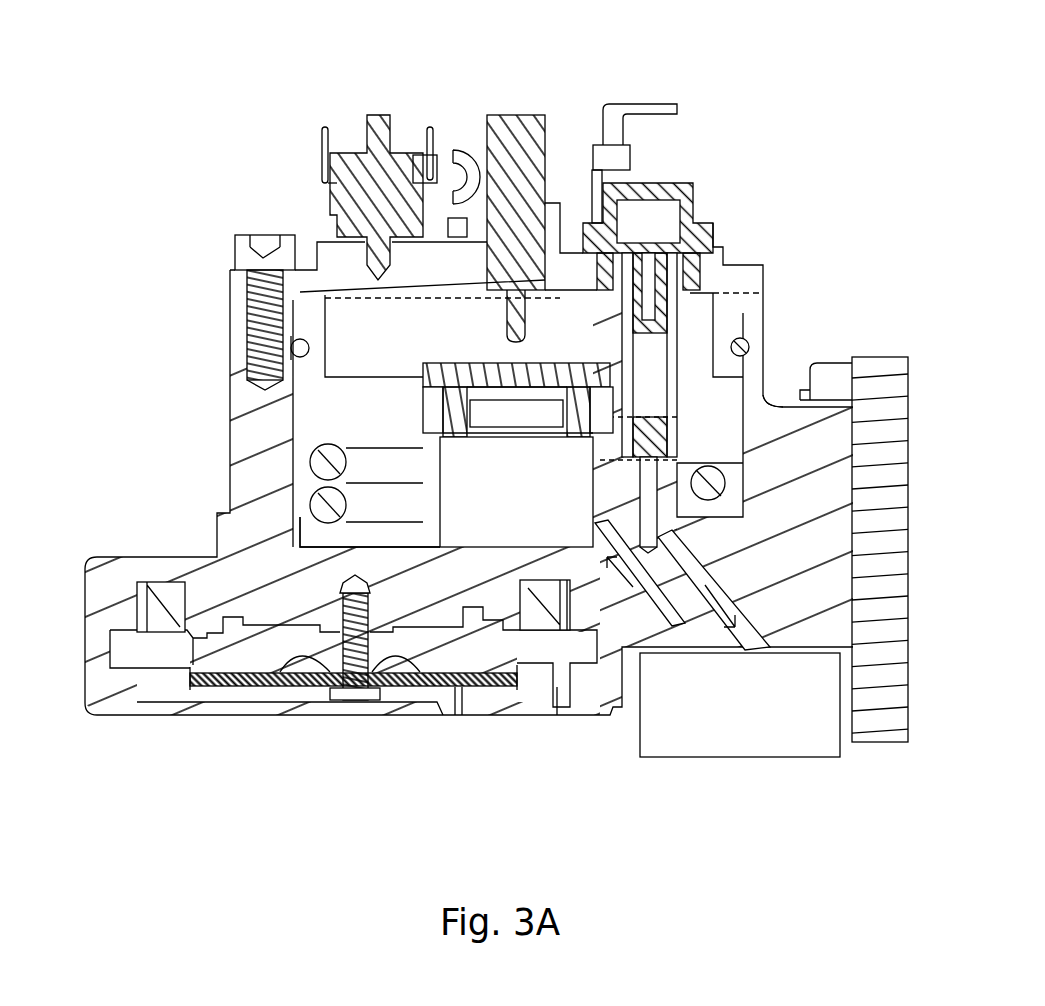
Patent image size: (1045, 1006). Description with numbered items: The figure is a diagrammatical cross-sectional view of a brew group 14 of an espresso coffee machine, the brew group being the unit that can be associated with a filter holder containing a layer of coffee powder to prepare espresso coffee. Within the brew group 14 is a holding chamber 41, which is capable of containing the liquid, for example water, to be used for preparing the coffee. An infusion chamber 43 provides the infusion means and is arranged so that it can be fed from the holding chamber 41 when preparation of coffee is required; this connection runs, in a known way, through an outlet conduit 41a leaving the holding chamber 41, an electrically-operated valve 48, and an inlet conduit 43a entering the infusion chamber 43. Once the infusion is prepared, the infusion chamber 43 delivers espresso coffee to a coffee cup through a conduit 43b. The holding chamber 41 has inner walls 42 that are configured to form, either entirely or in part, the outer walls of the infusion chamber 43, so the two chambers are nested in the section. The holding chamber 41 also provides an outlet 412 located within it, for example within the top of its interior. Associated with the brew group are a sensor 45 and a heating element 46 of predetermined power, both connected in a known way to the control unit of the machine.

The brew group 14 is at (755, 101).
The holding chamber 41 is at (323, 417).
The outlet conduit 41a is at (610, 657).
The inner walls 42 is at (437, 430).
The infusion chamber 43 is at (530, 502).
The inlet conduit 43a is at (653, 582).
The conduit 43b is at (455, 588).
The sensor 45 is at (527, 123).
The heating element 46 is at (618, 150).
The electrically-operated valve 48 is at (770, 738).
The outlet 412 is at (652, 367).